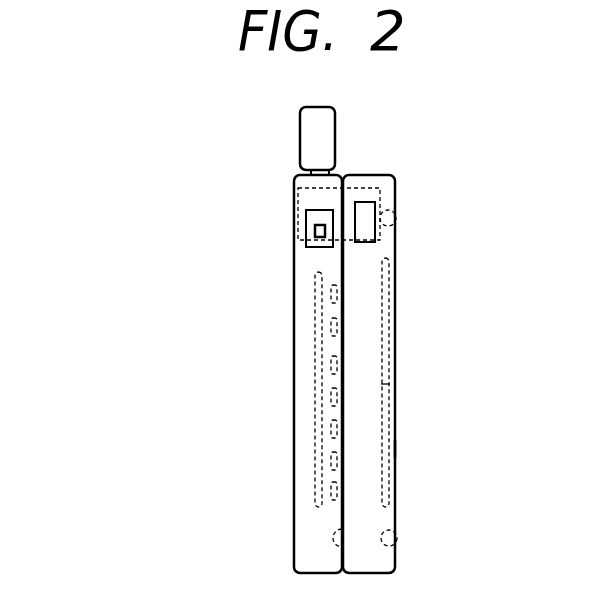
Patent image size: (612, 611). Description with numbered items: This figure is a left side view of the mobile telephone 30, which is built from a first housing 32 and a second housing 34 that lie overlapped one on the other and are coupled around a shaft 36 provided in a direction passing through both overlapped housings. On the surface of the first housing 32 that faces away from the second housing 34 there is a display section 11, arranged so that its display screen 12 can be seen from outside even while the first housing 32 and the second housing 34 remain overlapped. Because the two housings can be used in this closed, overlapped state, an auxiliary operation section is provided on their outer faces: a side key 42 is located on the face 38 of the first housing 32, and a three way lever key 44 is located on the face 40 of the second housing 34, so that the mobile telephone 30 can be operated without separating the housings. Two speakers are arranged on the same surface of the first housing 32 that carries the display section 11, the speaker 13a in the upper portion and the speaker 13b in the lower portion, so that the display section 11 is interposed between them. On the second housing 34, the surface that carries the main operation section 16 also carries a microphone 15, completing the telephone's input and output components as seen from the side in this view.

The mobile telephone 30 is at (138, 462).
The second housing 34 is at (295, 375).
The first housing 32 is at (395, 330).
The shaft 36 is at (357, 196).
The three way lever key 44 is at (307, 218).
The side key 42 is at (372, 212).
The speaker 13b is at (396, 216).
The face of the second housing 40 is at (315, 295).
The main operation section 16 is at (330, 423).
The face of the first housing 38 is at (385, 280).
The display screen 12 is at (386, 384).
The display section 11 is at (392, 449).
The microphone 15 is at (334, 539).
The speaker 13a is at (397, 538).